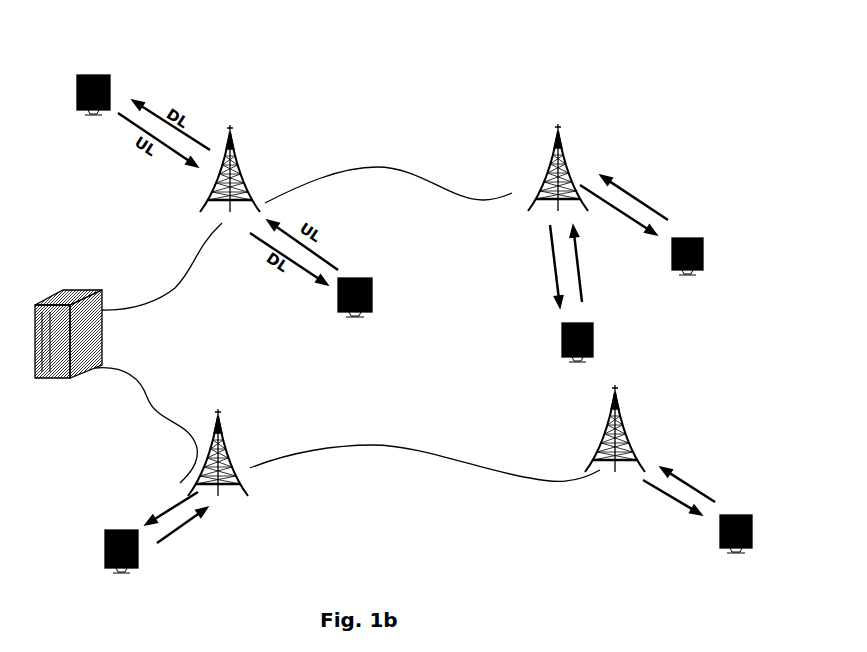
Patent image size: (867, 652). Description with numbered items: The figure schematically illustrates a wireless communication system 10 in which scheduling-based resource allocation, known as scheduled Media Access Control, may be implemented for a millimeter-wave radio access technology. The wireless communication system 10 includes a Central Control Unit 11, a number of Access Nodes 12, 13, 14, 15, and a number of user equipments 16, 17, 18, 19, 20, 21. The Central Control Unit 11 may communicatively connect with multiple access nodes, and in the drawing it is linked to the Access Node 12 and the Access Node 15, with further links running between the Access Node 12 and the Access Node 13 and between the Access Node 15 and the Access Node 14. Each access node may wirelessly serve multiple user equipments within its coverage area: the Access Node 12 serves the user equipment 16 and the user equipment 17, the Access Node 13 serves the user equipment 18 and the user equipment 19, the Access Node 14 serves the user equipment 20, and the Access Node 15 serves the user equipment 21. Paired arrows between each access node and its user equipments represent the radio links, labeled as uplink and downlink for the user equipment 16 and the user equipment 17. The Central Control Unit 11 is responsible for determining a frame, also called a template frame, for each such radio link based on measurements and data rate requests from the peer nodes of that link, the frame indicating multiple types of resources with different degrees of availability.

The wireless communication system 10 is at (678, 40).
The Central Control Unit 11 is at (98, 284).
The Access Node 12 is at (231, 140).
The Access Node 13 is at (558, 134).
The Access Node 14 is at (616, 398).
The Access Node 15 is at (219, 417).
The user equipment 16 is at (329, 307).
The user equipment 17 is at (80, 107).
The user equipment 18 is at (554, 357).
The user equipment 19 is at (694, 272).
The user equipment 20 is at (731, 545).
The user equipment 21 is at (104, 564).